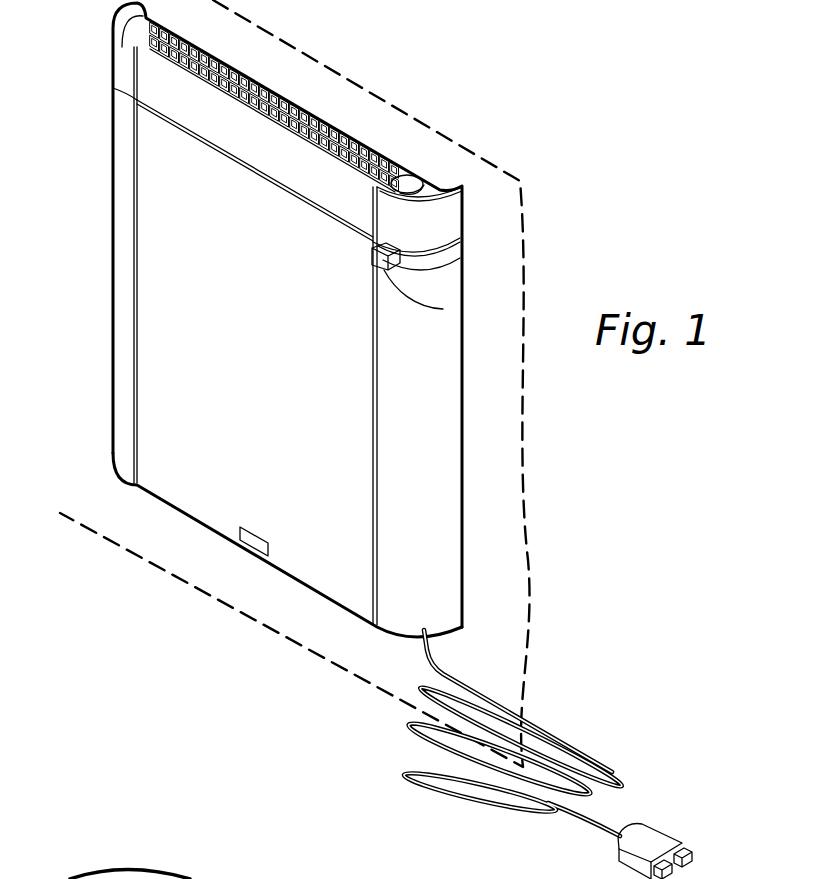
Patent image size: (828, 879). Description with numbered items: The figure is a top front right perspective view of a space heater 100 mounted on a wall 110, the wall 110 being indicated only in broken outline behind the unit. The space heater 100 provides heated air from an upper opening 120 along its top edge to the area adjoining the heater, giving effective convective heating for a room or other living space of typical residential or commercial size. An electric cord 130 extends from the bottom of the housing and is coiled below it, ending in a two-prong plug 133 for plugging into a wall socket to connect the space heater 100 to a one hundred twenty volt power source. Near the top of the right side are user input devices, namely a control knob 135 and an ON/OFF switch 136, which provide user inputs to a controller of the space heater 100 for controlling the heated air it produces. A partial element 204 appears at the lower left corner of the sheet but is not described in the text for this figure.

The space heater 100 is at (177, 485).
The wall 110 is at (497, 460).
The upper opening 120 is at (319, 108).
The electric cord 130 is at (447, 670).
The two-prong plug 133 is at (655, 838).
The control knob 135 is at (410, 180).
The ON/OFF switch 136 is at (443, 309).
The base 204 is at (125, 877).